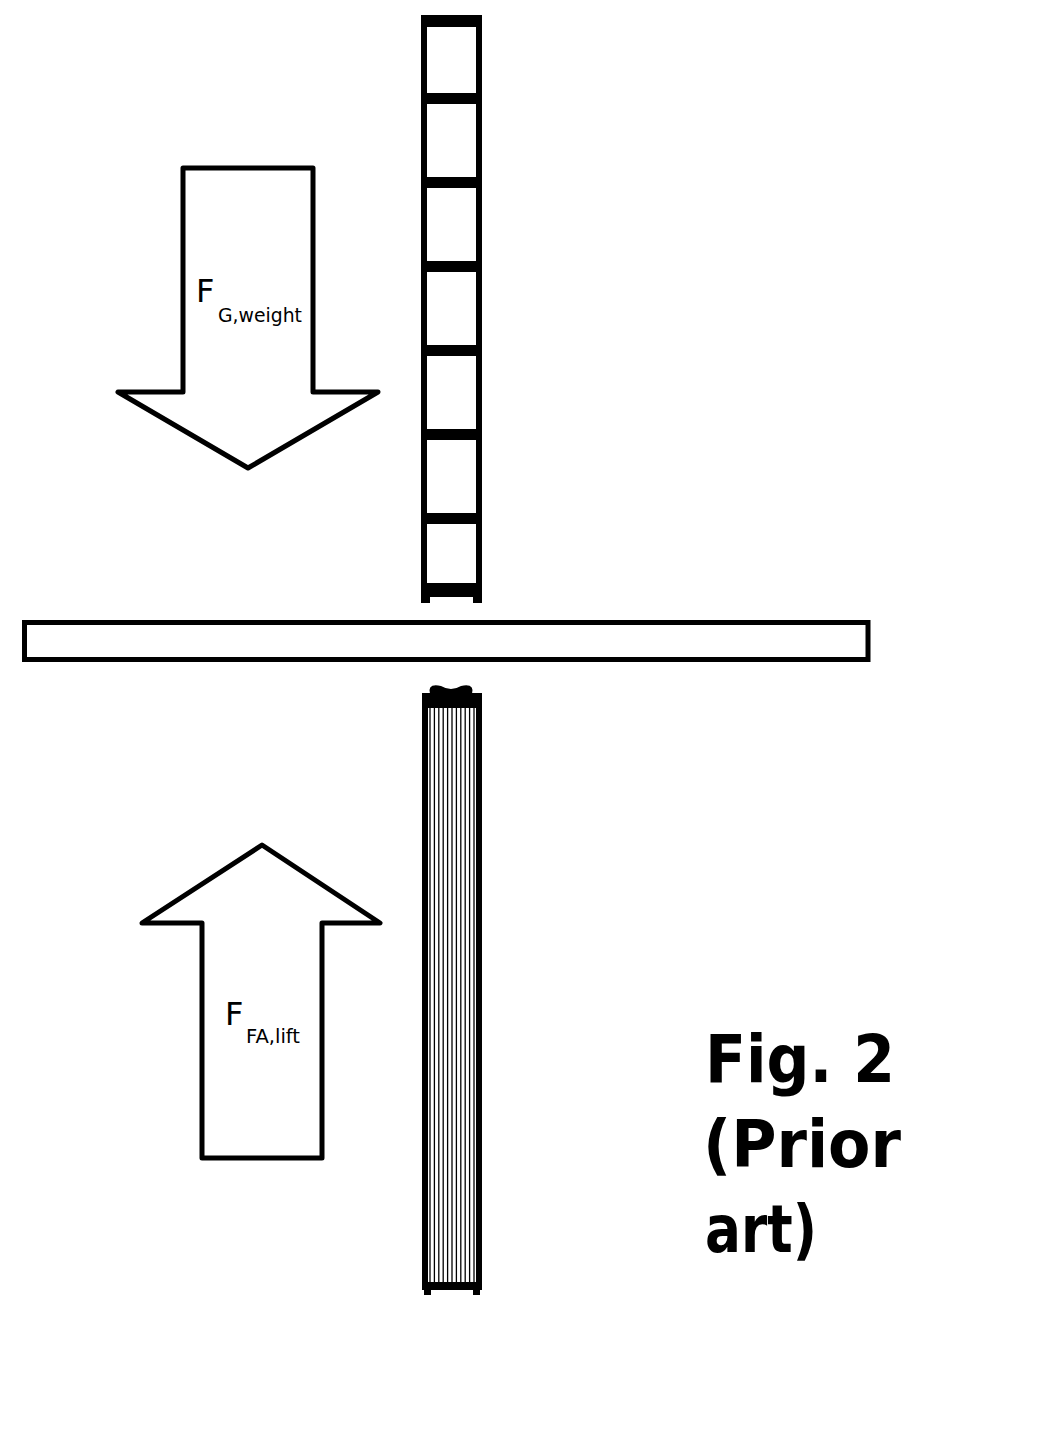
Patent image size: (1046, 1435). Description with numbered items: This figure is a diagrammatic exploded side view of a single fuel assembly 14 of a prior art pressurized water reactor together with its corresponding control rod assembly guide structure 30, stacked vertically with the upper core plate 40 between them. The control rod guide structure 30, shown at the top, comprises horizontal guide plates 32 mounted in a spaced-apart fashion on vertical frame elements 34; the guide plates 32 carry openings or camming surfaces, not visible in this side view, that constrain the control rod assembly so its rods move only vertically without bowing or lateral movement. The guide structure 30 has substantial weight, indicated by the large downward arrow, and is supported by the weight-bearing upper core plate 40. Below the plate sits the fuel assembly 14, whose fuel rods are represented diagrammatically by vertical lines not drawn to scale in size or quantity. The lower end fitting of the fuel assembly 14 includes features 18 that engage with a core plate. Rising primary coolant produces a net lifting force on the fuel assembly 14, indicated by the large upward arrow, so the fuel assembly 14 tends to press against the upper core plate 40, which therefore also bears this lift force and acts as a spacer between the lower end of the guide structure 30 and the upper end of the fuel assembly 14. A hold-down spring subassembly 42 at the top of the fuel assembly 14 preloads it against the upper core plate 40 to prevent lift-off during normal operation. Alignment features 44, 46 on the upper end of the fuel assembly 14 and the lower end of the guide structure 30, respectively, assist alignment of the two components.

The fuel assembly 14 is at (417, 997).
The features of the lower end fitting 18 is at (481, 1289).
The control rod guide structure 30 is at (407, 311).
The horizontal guide plate 32 is at (455, 176).
The vertical frame element 34 is at (425, 460).
The upper core plate 40 is at (738, 637).
The hold-down spring subassembly 42 is at (462, 690).
The alignment feature 44 is at (425, 695).
The alignment feature 46 is at (425, 605).